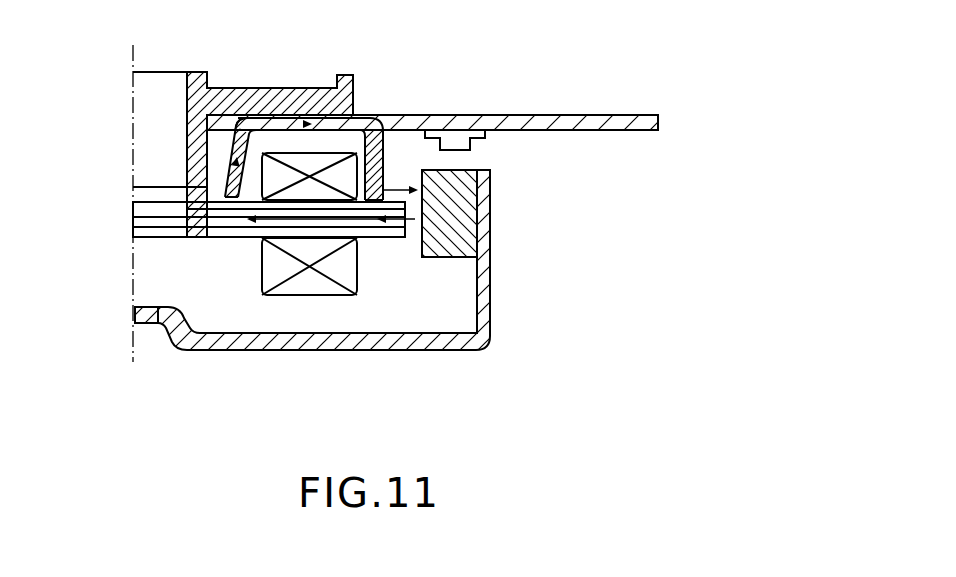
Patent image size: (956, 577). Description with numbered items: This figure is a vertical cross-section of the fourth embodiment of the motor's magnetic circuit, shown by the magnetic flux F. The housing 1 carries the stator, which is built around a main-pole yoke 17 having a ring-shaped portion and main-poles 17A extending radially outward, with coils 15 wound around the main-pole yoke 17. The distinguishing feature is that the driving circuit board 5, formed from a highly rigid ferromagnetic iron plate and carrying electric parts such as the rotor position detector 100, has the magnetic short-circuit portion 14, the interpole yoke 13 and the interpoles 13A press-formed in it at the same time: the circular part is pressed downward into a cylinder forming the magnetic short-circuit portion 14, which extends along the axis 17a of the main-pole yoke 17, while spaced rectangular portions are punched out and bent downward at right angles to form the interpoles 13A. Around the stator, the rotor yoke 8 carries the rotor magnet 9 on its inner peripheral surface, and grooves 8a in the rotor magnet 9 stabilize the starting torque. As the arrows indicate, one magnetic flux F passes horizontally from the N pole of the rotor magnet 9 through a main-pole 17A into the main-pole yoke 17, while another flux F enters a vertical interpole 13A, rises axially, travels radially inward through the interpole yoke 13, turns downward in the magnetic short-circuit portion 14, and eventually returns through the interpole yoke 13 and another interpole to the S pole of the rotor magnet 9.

The housing 1 is at (233, 88).
The driving circuit board 5 is at (600, 115).
The rotor yoke 8 is at (483, 310).
The grooves 8a is at (483, 193).
The rotor magnet 9 is at (477, 240).
The interpole yoke 13 is at (265, 117).
The interpoles 13A is at (385, 128).
The magnetic short-circuit portion 14 is at (240, 133).
The coils 15 is at (320, 287).
The main-pole yoke 17 is at (227, 232).
The main-pole 17A is at (401, 239).
The axis 17a is at (133, 190).
The rotor position detector 100 is at (485, 151).
The magnetic flux F is at (313, 113).